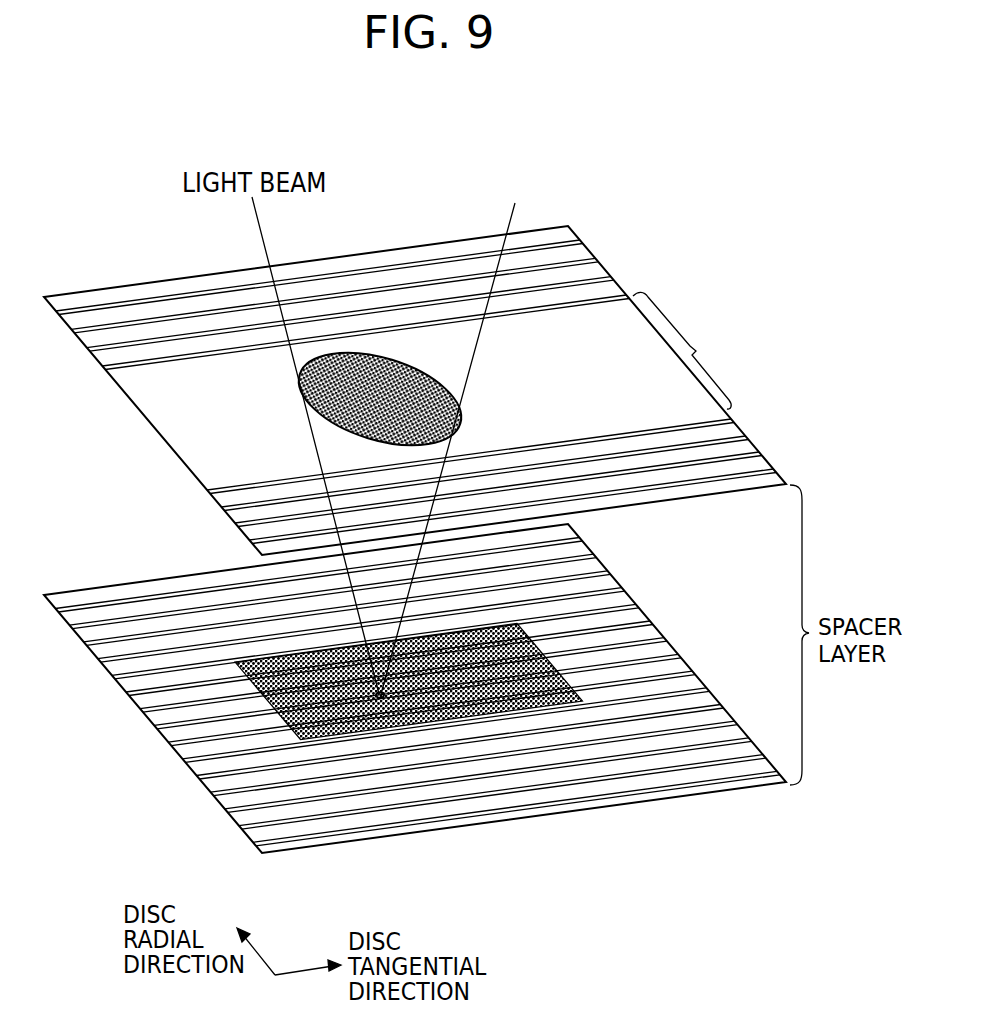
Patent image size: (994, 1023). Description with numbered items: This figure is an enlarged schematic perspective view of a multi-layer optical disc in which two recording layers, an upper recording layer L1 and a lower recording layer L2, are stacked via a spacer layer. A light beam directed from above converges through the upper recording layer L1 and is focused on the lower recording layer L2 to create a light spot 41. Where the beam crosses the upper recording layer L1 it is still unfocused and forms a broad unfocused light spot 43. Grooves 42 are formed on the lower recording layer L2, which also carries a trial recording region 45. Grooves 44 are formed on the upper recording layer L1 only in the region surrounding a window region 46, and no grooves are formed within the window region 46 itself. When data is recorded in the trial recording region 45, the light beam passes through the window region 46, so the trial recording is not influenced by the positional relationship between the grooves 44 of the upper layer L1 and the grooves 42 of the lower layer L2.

The light spot 41 is at (381, 698).
The grooves 42 is at (93, 603).
The unfocused light spot 43 is at (380, 368).
The grooves 44 is at (590, 255).
The trial recording region 45 is at (503, 703).
The window region 46 is at (742, 350).
The upper recording layer L1 is at (130, 388).
The lower recording layer L2 is at (153, 716).